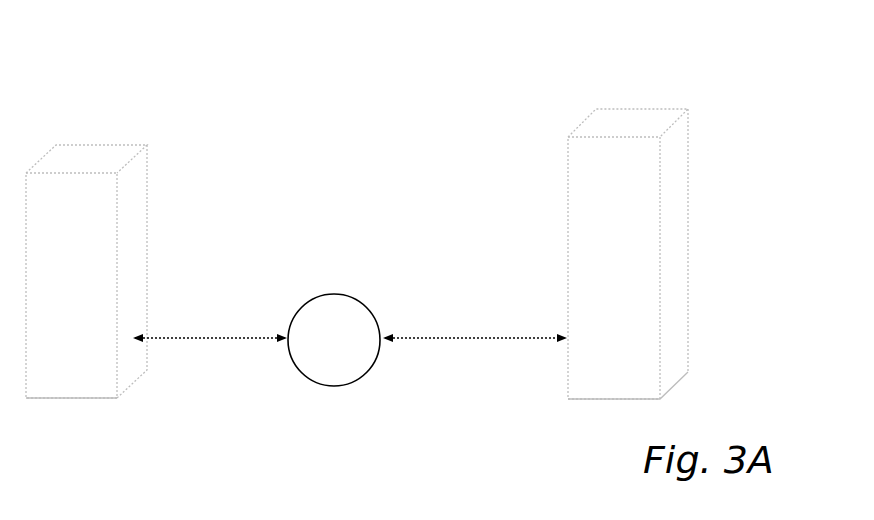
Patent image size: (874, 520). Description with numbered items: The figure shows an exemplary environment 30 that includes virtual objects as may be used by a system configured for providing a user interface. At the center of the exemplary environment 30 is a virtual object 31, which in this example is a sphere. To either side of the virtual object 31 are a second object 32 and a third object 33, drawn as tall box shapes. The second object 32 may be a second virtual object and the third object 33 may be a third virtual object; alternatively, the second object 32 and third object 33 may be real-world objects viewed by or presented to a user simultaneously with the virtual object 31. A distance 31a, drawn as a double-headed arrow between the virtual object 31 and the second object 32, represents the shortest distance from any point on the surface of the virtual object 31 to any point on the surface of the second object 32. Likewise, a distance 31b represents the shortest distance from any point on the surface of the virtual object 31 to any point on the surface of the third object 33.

The exemplary environment 30 is at (755, 61).
The virtual object 31 is at (346, 349).
The distance 31a is at (227, 342).
The distance 31b is at (460, 342).
The second object 32 is at (83, 298).
The third object 33 is at (627, 263).